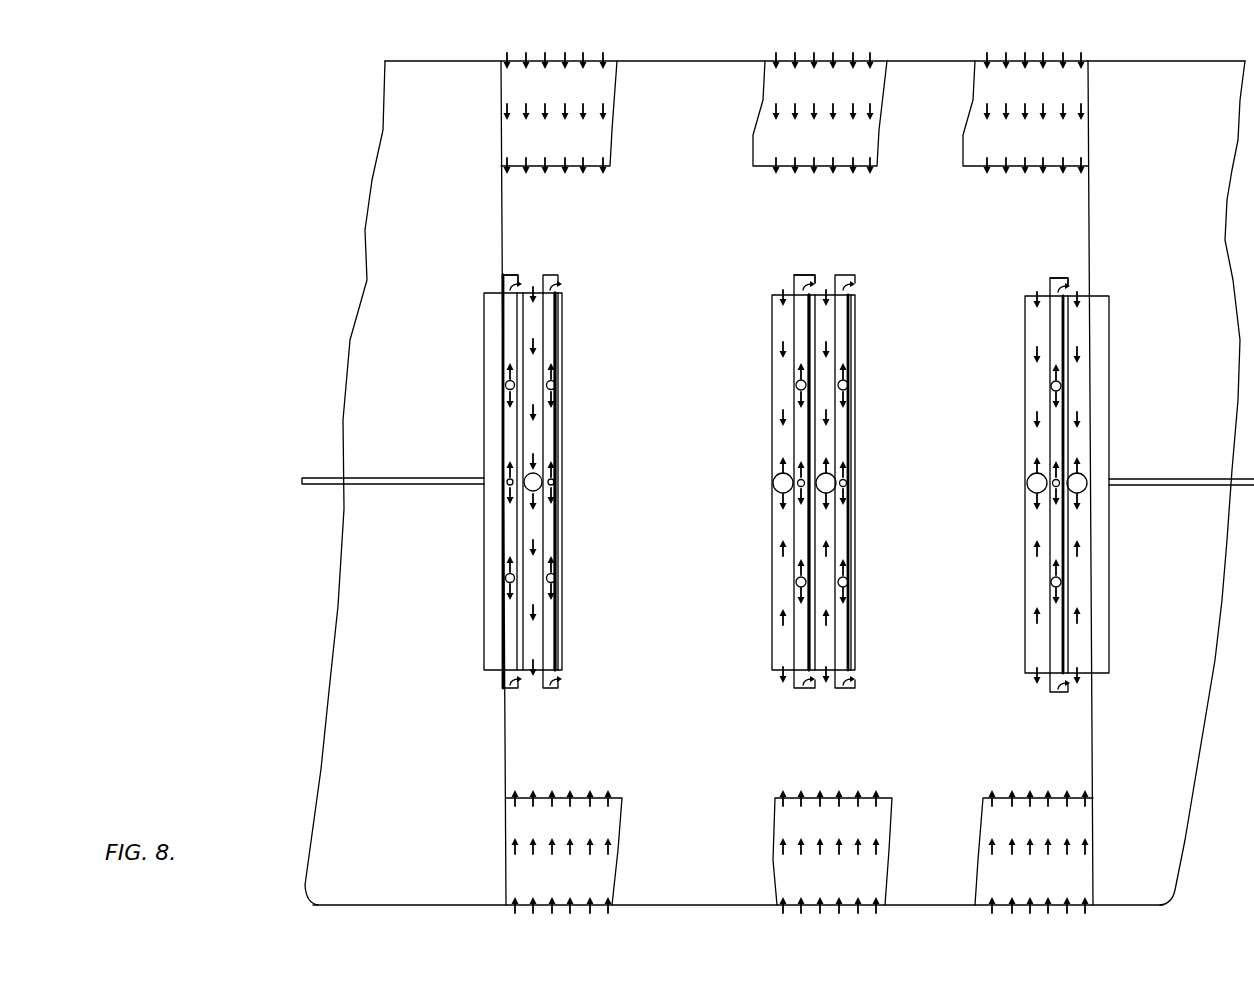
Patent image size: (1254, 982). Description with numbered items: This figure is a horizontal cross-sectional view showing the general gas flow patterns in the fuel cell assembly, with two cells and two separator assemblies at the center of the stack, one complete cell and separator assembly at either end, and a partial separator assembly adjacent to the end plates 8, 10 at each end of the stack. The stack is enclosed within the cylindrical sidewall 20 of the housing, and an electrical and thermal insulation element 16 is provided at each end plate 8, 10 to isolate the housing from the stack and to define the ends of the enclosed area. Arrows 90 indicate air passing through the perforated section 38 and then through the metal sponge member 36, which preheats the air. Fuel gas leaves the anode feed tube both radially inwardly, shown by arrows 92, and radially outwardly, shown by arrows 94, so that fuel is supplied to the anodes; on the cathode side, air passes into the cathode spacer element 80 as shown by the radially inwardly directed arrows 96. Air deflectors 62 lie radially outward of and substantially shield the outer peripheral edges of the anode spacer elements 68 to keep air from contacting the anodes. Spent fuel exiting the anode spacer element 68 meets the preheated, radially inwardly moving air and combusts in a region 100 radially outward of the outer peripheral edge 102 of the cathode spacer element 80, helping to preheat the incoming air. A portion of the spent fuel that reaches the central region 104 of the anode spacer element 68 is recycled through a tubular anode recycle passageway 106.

The end plate 8 is at (1105, 421).
The end plate 10 is at (484, 545).
The electrical and thermal insulation element 16 is at (410, 296).
The cylindrical sidewall 20 is at (1160, 62).
The metal sponge member 36 is at (1050, 147).
The perforated section 38 is at (932, 61).
The air deflector 62 is at (578, 258).
The anode spacer element 68 is at (800, 432).
The cathode spacer element 80 is at (828, 318).
The arrows (air flow) 90 is at (613, 112).
The arrows (radially inward fuel flow) 92 is at (847, 398).
The arrows (radially outward fuel flow) 94 is at (843, 378).
The arrows (radially inward air flow) 96 is at (780, 348).
The combustion region 100 is at (531, 268).
The outer peripheral edge 102 is at (781, 290).
The central region 104 is at (560, 505).
The tubular anode recycle passageway 106 is at (560, 470).